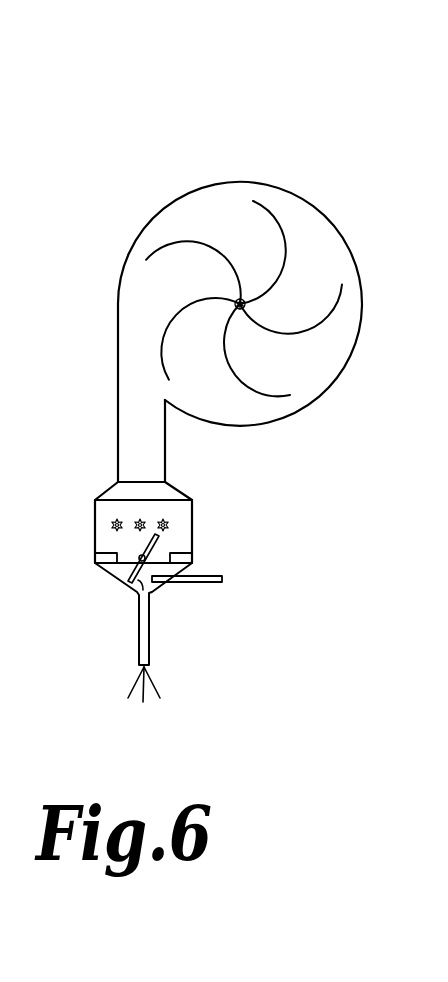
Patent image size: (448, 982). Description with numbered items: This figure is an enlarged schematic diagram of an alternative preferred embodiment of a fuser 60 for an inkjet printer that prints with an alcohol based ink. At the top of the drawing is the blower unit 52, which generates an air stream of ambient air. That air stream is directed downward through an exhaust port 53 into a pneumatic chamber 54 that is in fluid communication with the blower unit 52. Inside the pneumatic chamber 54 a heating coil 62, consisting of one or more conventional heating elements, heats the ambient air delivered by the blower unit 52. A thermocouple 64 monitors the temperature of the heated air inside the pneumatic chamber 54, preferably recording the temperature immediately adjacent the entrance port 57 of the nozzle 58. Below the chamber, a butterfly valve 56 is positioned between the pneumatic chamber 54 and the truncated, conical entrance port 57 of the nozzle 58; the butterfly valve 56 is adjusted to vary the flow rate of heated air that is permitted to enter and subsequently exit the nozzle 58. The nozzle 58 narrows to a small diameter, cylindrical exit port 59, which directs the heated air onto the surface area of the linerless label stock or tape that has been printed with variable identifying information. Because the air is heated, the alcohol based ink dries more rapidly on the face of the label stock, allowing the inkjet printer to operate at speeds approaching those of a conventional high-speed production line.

The blower unit 52 is at (323, 237).
The exhaust port 53 is at (128, 442).
The pneumatic chamber 54 is at (100, 512).
The butterfly valve 56 is at (145, 548).
The entrance port 57 is at (123, 587).
The nozzle 58 is at (150, 628).
The exit port 59 is at (150, 675).
The fuser 60 is at (248, 134).
The heating coil 62 is at (172, 527).
The thermocouple 64 is at (222, 575).